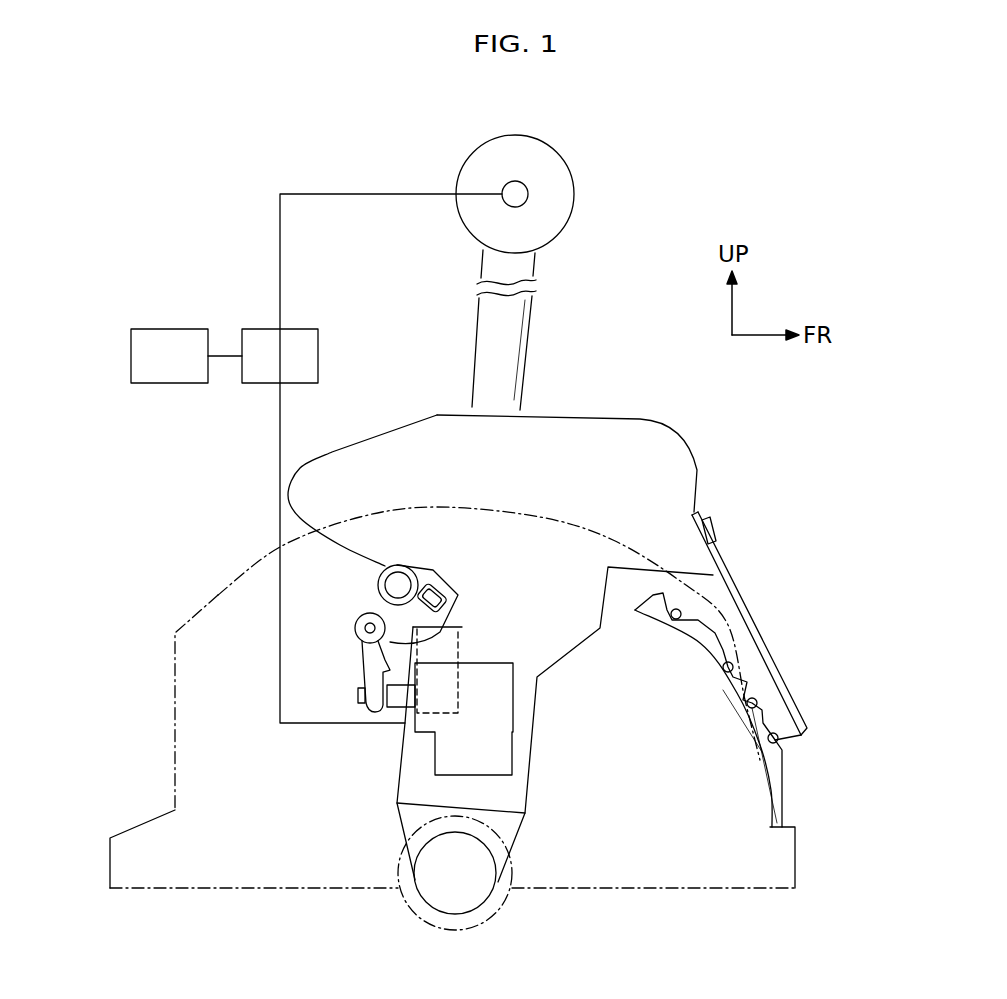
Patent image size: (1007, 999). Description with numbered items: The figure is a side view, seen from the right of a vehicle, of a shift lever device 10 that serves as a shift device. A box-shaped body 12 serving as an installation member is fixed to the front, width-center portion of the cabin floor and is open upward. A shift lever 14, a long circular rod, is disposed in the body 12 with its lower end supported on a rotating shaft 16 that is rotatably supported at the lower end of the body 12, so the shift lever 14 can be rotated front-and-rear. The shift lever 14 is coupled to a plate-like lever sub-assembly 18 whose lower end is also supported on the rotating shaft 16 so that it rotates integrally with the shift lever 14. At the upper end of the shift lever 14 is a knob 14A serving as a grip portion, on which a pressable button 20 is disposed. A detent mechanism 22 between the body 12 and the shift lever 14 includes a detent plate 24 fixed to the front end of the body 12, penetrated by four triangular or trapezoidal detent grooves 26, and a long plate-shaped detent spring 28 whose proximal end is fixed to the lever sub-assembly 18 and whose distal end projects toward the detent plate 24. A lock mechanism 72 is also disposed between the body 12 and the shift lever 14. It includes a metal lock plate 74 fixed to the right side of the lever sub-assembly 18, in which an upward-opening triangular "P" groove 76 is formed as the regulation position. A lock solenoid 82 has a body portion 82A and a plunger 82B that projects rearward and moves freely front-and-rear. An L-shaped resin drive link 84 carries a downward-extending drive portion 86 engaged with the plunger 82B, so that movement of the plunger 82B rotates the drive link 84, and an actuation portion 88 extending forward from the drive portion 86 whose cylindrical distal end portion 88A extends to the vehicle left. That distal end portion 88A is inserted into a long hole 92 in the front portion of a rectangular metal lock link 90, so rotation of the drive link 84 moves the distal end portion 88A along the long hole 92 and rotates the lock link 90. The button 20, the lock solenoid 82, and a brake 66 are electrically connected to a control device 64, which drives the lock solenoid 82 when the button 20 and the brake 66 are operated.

The shift lever device 10 is at (618, 351).
The body 12 is at (228, 582).
The shift lever 14 is at (475, 340).
The knob 14A is at (575, 192).
The rotating shaft 16 is at (472, 915).
The lever sub-assembly 18 is at (395, 428).
The button 20 is at (525, 182).
The detent mechanism 22 is at (777, 623).
The detent plate 24 is at (785, 788).
The detent grooves 26 is at (680, 619).
The detent spring 28 is at (770, 667).
The control device 64 is at (318, 357).
The brake 66 is at (167, 328).
The lock mechanism 72 is at (516, 752).
The lock plate 74 is at (463, 643).
The "P" groove 76 is at (434, 642).
The lock solenoid 82 is at (517, 655).
The body portion 82A is at (535, 697).
The plunger 82B is at (358, 697).
The drive link 84 is at (355, 622).
The drive portion 86 is at (360, 666).
The actuation portion 88 is at (378, 612).
The distal end portion 88A is at (448, 577).
The lock link 90 is at (423, 583).
The long hole 92 is at (428, 590).